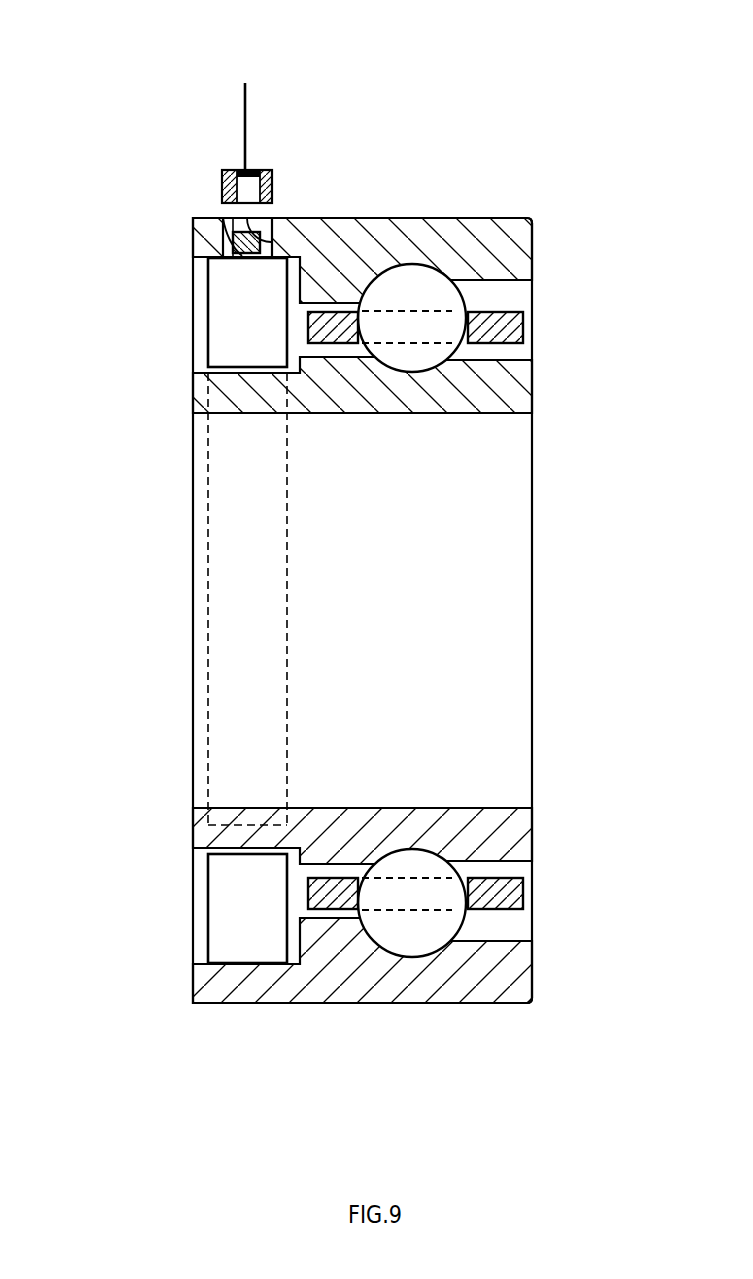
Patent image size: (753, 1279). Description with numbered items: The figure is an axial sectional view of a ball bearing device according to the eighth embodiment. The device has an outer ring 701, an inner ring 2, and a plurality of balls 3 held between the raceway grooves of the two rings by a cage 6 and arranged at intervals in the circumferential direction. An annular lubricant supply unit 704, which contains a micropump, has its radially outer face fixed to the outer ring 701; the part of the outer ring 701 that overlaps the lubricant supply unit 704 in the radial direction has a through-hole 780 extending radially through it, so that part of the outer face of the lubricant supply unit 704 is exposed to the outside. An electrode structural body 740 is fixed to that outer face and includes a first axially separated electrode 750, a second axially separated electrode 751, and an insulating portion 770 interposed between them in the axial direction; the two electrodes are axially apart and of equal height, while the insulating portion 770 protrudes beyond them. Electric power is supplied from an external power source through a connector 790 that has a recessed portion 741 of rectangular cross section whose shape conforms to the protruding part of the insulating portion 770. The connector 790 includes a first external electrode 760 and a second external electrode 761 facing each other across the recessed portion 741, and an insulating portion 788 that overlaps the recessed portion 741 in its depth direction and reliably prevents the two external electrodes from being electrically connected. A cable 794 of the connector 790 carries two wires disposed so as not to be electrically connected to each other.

The outer ring 701 is at (482, 228).
The first axially separated electrode 750 is at (275, 237).
The inner ring 2 is at (515, 387).
The balls 3 is at (443, 295).
The cage 6 is at (522, 328).
The lubricant supply unit 704 is at (232, 320).
The electrode structural body 740 is at (246, 258).
The second axially separated electrode 751 is at (228, 235).
The through-hole 780 is at (227, 217).
The insulating portion 770 is at (270, 217).
The first external electrode 760 is at (273, 178).
The second external electrode 761 is at (222, 183).
The recessed portion 741 is at (232, 170).
The insulating portion 788 is at (258, 168).
The connector 790 is at (273, 172).
The cable 794 is at (248, 108).